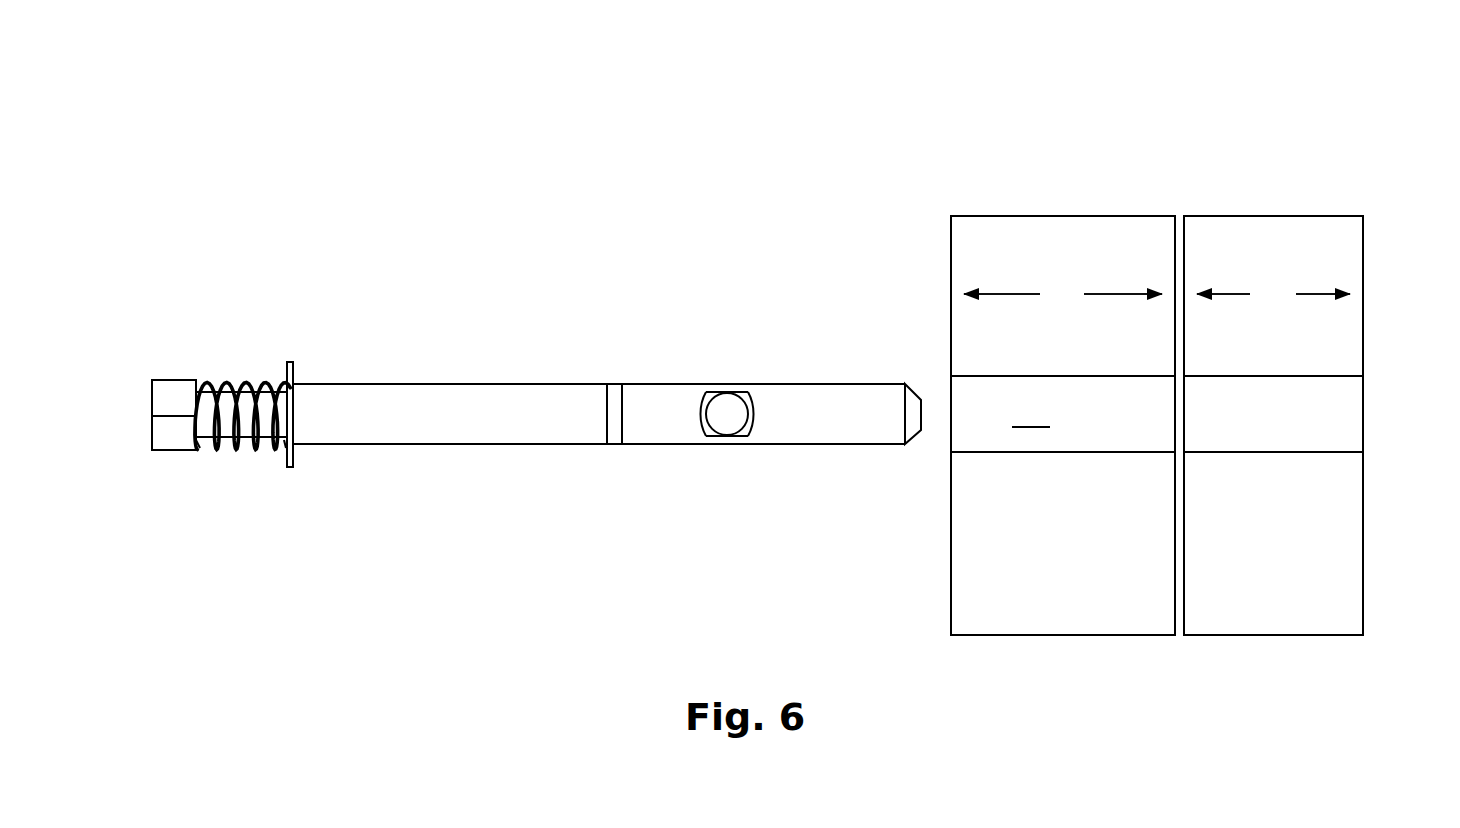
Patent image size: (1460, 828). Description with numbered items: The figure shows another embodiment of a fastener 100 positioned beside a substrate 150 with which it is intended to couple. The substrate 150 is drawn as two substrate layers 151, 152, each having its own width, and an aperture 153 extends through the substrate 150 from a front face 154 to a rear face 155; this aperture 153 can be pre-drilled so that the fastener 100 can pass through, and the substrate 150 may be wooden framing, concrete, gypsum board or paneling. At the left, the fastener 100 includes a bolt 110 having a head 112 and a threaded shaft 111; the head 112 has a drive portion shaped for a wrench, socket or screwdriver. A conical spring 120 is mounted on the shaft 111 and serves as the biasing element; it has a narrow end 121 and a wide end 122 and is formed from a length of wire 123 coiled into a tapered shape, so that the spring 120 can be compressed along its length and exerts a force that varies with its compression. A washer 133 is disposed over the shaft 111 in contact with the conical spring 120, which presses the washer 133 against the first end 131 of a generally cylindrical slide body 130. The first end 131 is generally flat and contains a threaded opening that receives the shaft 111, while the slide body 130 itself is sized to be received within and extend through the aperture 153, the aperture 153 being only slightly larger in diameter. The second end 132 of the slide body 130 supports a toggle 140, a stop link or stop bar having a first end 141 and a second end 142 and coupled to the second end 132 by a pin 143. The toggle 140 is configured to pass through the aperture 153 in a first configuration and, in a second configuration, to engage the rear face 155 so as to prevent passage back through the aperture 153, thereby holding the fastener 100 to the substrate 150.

The fastener 100 is at (202, 167).
The bolt 110 is at (145, 353).
The shaft 111 is at (215, 392).
The head 112 is at (152, 448).
The conical spring 120 is at (237, 482).
The narrow end 121 is at (195, 447).
The wide end 122 is at (277, 468).
The wire 123 is at (244, 380).
The slide body 130 is at (467, 353).
The first end 131 is at (305, 373).
The second end 132 is at (727, 353).
The washer 133 is at (290, 362).
The toggle 140 is at (725, 475).
The first end 141 is at (905, 445).
The second end 142 is at (622, 445).
The pin 143 is at (727, 414).
The substrate 150 is at (1023, 97).
The substrate layer 151 is at (998, 243).
The substrate layer 152 is at (1231, 243).
The aperture 153 is at (1035, 414).
The front face 154 is at (951, 268).
The rear face 155 is at (1363, 268).